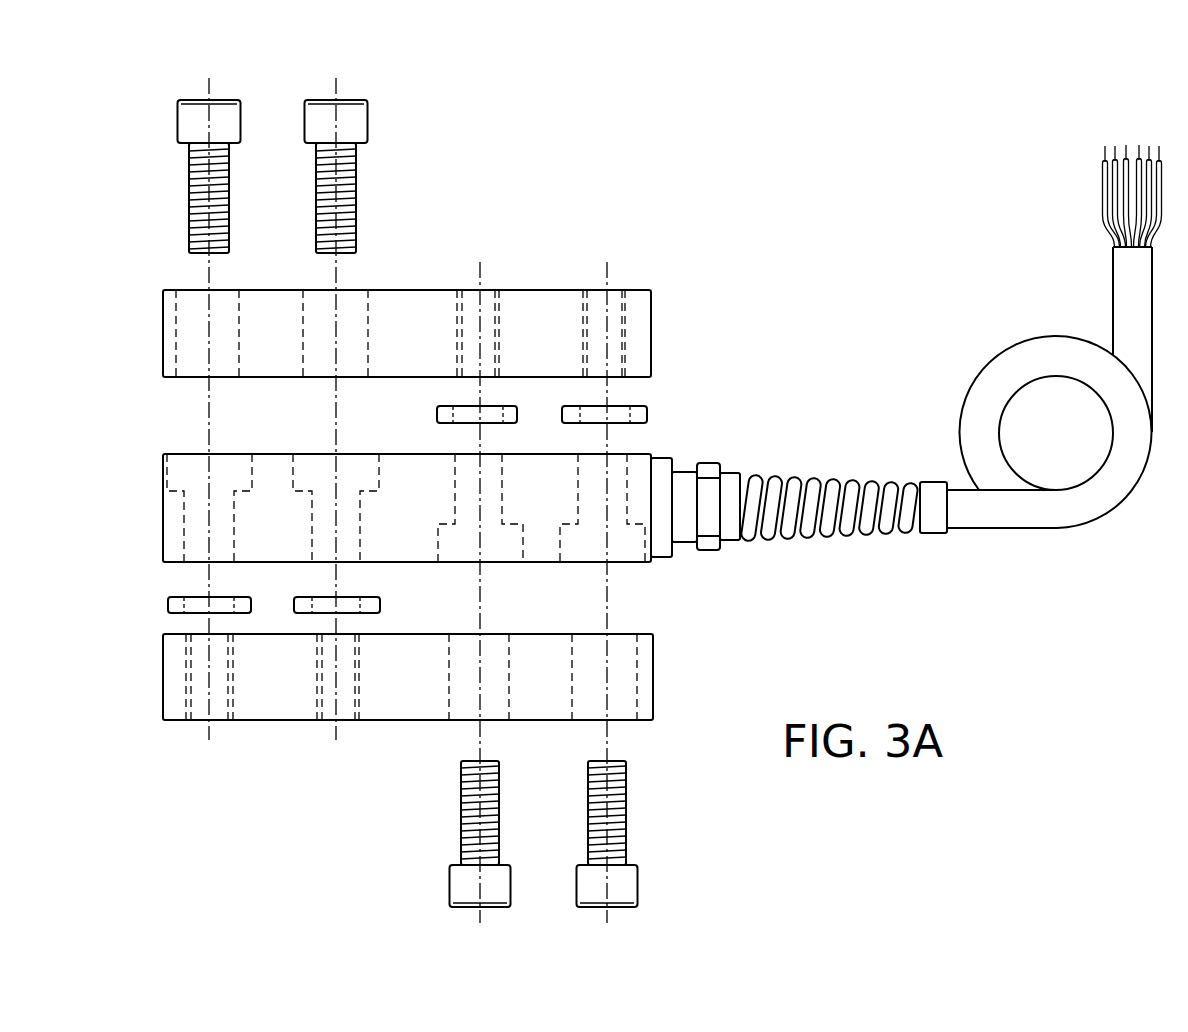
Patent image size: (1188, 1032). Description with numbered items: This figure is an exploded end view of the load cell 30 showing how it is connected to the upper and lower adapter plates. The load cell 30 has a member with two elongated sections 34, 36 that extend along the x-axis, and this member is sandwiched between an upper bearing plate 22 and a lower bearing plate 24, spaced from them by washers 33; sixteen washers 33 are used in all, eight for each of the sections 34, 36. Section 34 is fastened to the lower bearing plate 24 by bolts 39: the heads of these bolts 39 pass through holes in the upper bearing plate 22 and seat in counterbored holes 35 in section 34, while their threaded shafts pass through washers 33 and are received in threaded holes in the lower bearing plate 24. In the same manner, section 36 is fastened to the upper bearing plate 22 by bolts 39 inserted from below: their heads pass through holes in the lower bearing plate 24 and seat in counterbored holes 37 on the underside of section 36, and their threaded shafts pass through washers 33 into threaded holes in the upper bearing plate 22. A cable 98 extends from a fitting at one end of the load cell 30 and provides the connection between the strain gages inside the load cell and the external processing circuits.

The upper bearing plate 22 is at (163, 335).
The lower bearing plate 24 is at (163, 676).
The load cell 30 is at (402, 504).
The washers 33 is at (437, 415).
The elongated section 34 is at (270, 460).
The counterbored holes 35 is at (178, 463).
The elongated section 36 is at (537, 548).
The counterbored holes 37 is at (622, 455).
The bolts 39 is at (178, 118).
The cable 98 is at (963, 540).